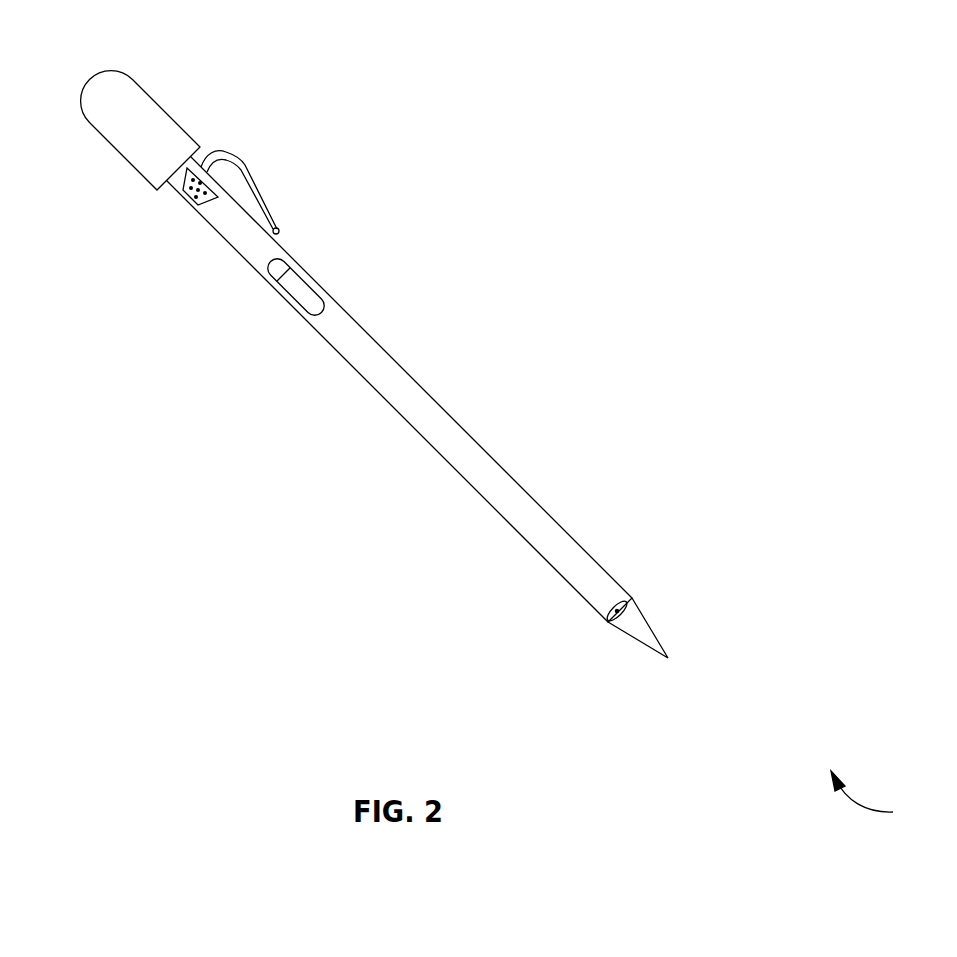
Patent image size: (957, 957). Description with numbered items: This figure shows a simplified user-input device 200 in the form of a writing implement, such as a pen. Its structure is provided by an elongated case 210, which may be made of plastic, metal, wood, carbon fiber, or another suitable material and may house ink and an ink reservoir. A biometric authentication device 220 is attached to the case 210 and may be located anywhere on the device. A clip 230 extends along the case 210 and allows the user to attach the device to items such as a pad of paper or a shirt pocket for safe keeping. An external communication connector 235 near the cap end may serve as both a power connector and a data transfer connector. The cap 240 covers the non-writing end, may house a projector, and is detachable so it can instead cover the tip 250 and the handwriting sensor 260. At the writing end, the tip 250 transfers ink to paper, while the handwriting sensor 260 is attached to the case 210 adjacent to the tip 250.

The user-input device 200 is at (884, 797).
The case 210 is at (350, 316).
The biometric authentication device 220 is at (295, 263).
The clip 230 is at (237, 151).
The external communication connector 235 is at (184, 203).
The cap 240 is at (128, 74).
The tip 250 is at (667, 657).
The handwriting sensor 260 is at (627, 600).